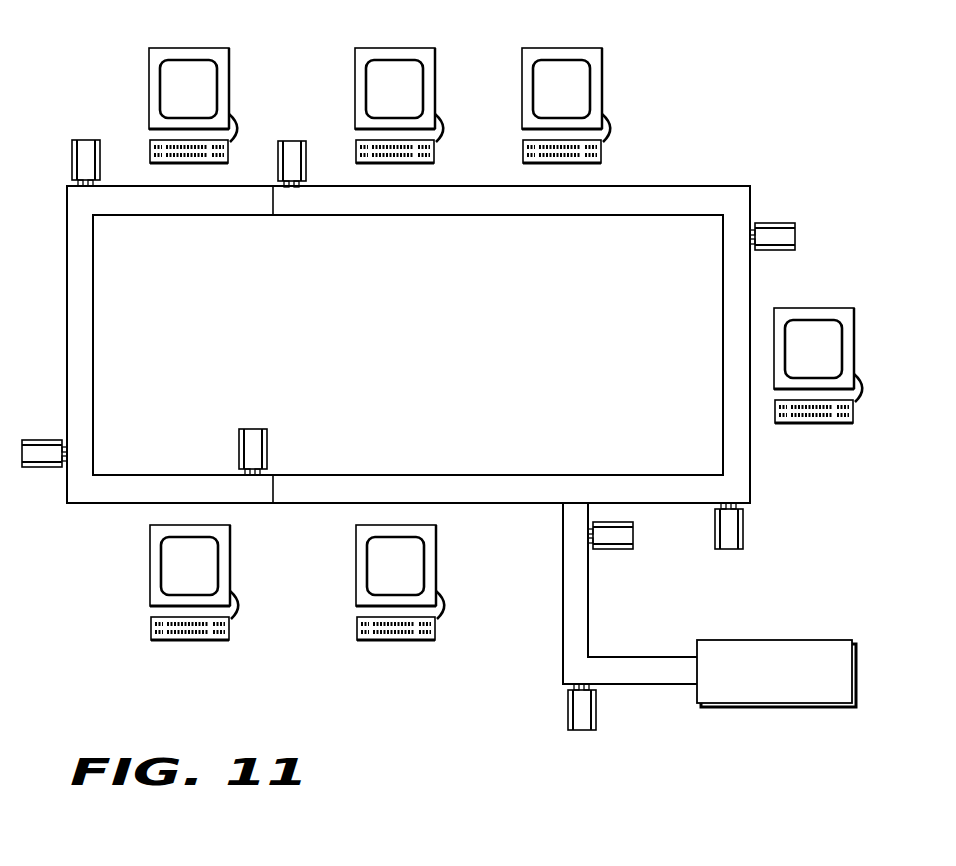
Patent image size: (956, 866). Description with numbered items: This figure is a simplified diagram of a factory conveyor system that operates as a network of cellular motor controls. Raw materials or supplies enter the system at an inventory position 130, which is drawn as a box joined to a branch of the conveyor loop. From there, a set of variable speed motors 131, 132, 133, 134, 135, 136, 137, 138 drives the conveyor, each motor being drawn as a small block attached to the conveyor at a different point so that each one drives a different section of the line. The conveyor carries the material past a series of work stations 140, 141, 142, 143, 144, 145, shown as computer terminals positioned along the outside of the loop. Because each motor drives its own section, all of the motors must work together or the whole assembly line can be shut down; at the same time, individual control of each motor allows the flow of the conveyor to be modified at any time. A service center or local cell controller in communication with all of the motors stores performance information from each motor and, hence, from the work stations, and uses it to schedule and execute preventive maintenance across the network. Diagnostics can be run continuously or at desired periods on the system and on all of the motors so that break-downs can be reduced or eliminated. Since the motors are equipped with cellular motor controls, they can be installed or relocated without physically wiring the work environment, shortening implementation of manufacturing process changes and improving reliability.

The inventory position 130 is at (797, 704).
The variable speed motor 131 is at (580, 731).
The variable speed motor 132 is at (621, 550).
The variable speed motor 133 is at (743, 533).
The variable speed motor 134 is at (795, 232).
The variable speed motor 135 is at (291, 140).
The variable speed motor 136 is at (80, 139).
The variable speed motor 137 is at (35, 468).
The variable speed motor 138 is at (255, 429).
The work station 140 is at (823, 423).
The work station 141 is at (577, 48).
The work station 142 is at (410, 48).
The work station 143 is at (172, 48).
The work station 144 is at (173, 641).
The work station 145 is at (378, 641).